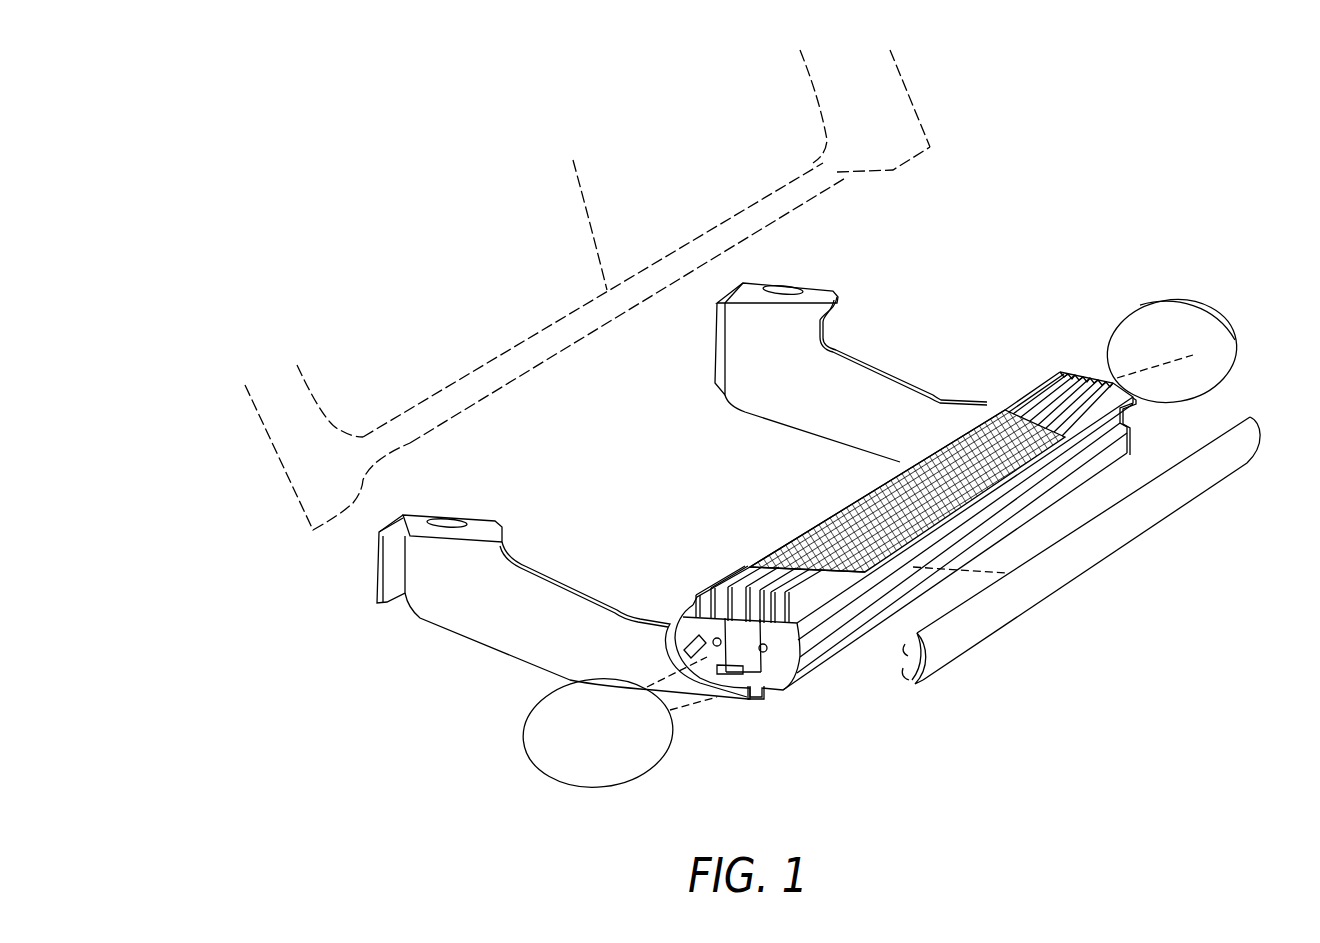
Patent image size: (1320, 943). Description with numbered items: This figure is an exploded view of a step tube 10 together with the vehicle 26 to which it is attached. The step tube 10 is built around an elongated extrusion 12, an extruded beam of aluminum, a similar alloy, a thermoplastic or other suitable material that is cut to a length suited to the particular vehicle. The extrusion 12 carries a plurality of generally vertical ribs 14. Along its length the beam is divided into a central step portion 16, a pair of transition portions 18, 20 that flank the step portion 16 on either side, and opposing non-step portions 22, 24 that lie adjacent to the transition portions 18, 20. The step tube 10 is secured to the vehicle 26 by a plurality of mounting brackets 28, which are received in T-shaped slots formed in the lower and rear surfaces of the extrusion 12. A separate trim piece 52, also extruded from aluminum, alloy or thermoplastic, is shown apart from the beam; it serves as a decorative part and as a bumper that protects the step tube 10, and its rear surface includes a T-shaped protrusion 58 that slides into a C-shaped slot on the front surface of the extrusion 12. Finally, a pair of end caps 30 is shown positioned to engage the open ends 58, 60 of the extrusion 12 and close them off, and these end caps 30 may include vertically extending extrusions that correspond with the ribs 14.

The step tube 10 is at (1093, 282).
The extrusion 12 is at (807, 660).
The ribs 14 is at (737, 575).
The step portion 16 is at (817, 522).
The transition portion 18 is at (770, 557).
The transition portion 20 is at (1015, 408).
The non-step portion 22 is at (840, 630).
The non-step portion 24 is at (1043, 377).
The vehicle 26 is at (800, 148).
The mounting brackets 28 is at (850, 385).
The end caps 30 is at (1210, 360).
The trim piece 52 is at (1150, 507).
The T-shaped protrusion 58 is at (757, 697).
The open end 60 is at (1121, 426).